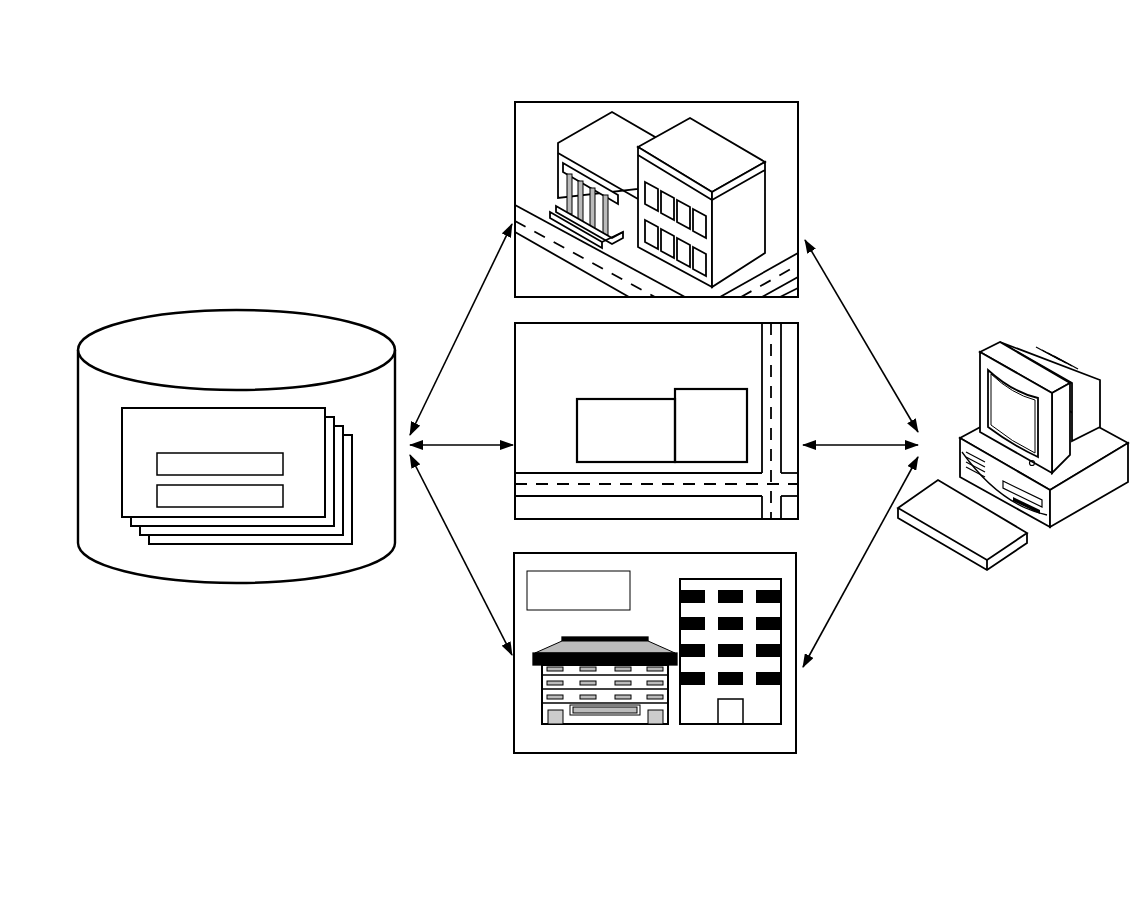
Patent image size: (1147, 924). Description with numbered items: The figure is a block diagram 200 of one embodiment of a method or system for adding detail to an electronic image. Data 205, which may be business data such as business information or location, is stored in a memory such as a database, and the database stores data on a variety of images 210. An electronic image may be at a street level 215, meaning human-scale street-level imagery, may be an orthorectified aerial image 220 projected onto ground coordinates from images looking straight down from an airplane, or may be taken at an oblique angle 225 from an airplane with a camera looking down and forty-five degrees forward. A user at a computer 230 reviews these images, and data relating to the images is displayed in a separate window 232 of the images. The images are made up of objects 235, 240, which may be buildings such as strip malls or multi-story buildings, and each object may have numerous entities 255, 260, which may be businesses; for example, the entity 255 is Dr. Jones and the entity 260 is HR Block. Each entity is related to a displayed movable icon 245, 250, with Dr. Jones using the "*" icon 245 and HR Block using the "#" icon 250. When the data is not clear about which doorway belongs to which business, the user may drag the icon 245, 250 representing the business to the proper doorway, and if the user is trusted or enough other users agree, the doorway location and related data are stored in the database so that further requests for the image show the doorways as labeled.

The block diagram 200 is at (670, 36).
The data 205 is at (212, 317).
The images 210 is at (162, 542).
The street level image 215 is at (513, 687).
The orthorectified aerial image 220 is at (515, 392).
The oblique angle image 225 is at (513, 165).
The computer 230 is at (1003, 353).
The separate window 232 is at (537, 573).
The object 235 is at (597, 732).
The object 240 is at (733, 730).
The icon 245 is at (532, 583).
The icon 250 is at (537, 600).
The entity 255 is at (620, 580).
The entity 260 is at (620, 602).